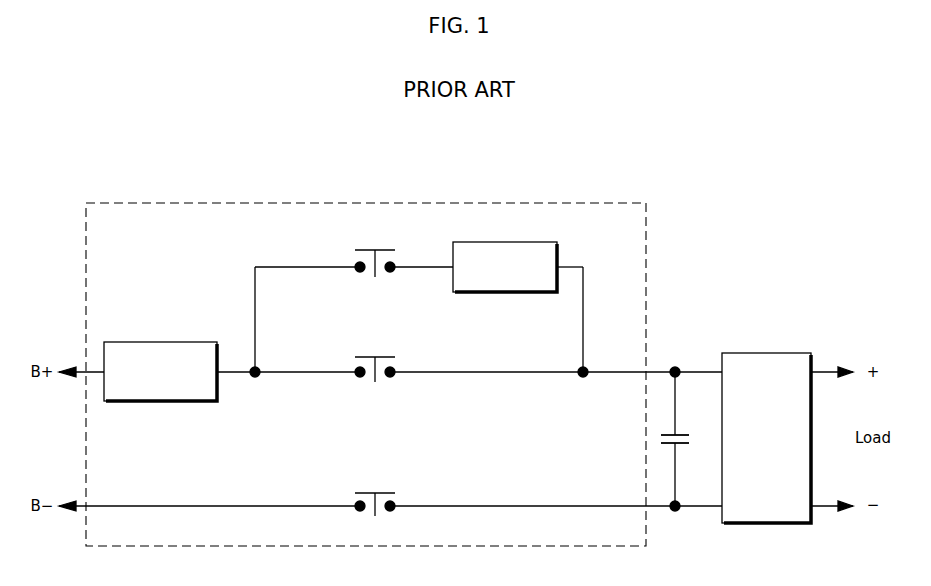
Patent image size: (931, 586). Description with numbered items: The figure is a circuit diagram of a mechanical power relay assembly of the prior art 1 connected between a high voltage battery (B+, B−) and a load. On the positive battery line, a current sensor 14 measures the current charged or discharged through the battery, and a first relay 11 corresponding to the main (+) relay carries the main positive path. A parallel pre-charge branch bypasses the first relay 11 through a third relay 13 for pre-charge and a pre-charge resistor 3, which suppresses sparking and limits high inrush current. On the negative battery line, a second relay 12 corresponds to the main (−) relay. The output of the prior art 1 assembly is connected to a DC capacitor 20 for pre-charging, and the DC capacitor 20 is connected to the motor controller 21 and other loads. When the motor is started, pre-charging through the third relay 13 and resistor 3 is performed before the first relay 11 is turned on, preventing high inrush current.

The prior art power relay assembly 1 is at (626, 203).
The pre-charge resistor 3 is at (552, 242).
The first relay 11 is at (384, 357).
The second relay 12 is at (384, 493).
The third relay 13 is at (384, 250).
The current sensor 14 is at (196, 341).
The DC capacitor 20 is at (682, 435).
The motor controller 21 is at (801, 353).